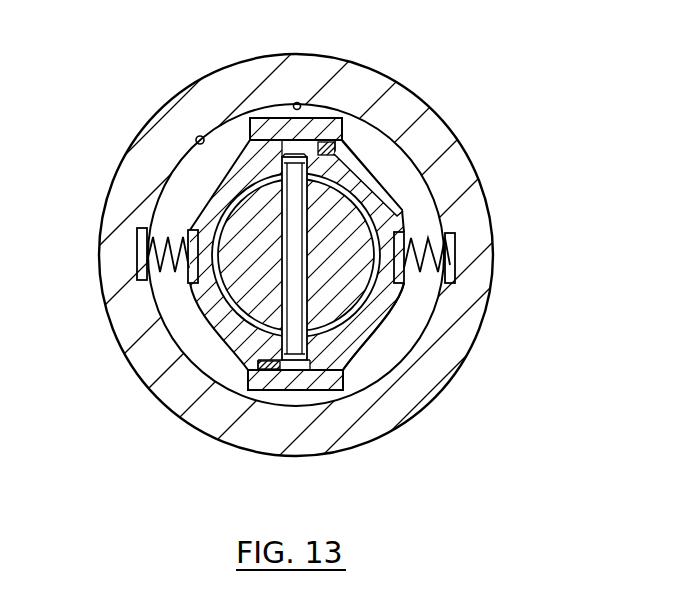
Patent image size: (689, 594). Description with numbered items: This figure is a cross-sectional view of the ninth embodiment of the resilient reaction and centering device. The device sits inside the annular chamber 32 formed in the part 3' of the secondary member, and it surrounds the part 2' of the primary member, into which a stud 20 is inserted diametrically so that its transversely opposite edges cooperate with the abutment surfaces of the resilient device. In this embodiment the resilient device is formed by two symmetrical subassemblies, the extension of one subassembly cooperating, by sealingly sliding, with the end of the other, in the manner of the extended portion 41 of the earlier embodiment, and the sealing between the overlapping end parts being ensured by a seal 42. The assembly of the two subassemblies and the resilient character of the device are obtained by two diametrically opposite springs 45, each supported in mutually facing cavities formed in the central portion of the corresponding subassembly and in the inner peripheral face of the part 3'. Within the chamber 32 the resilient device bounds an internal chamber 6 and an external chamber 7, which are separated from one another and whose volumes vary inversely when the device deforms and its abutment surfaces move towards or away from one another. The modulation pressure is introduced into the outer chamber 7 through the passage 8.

The part of secondary member 3' is at (344, 297).
The external chamber 7 is at (193, 190).
The extended portion 41 is at (222, 320).
The part of primary member 2' is at (339, 297).
The stud 20 is at (304, 216).
The seal 42 is at (340, 149).
The internal chamber 6 is at (348, 326).
The spring 45 is at (168, 285).
The annular chamber 32 is at (204, 135).
The passage 8 is at (300, 102).